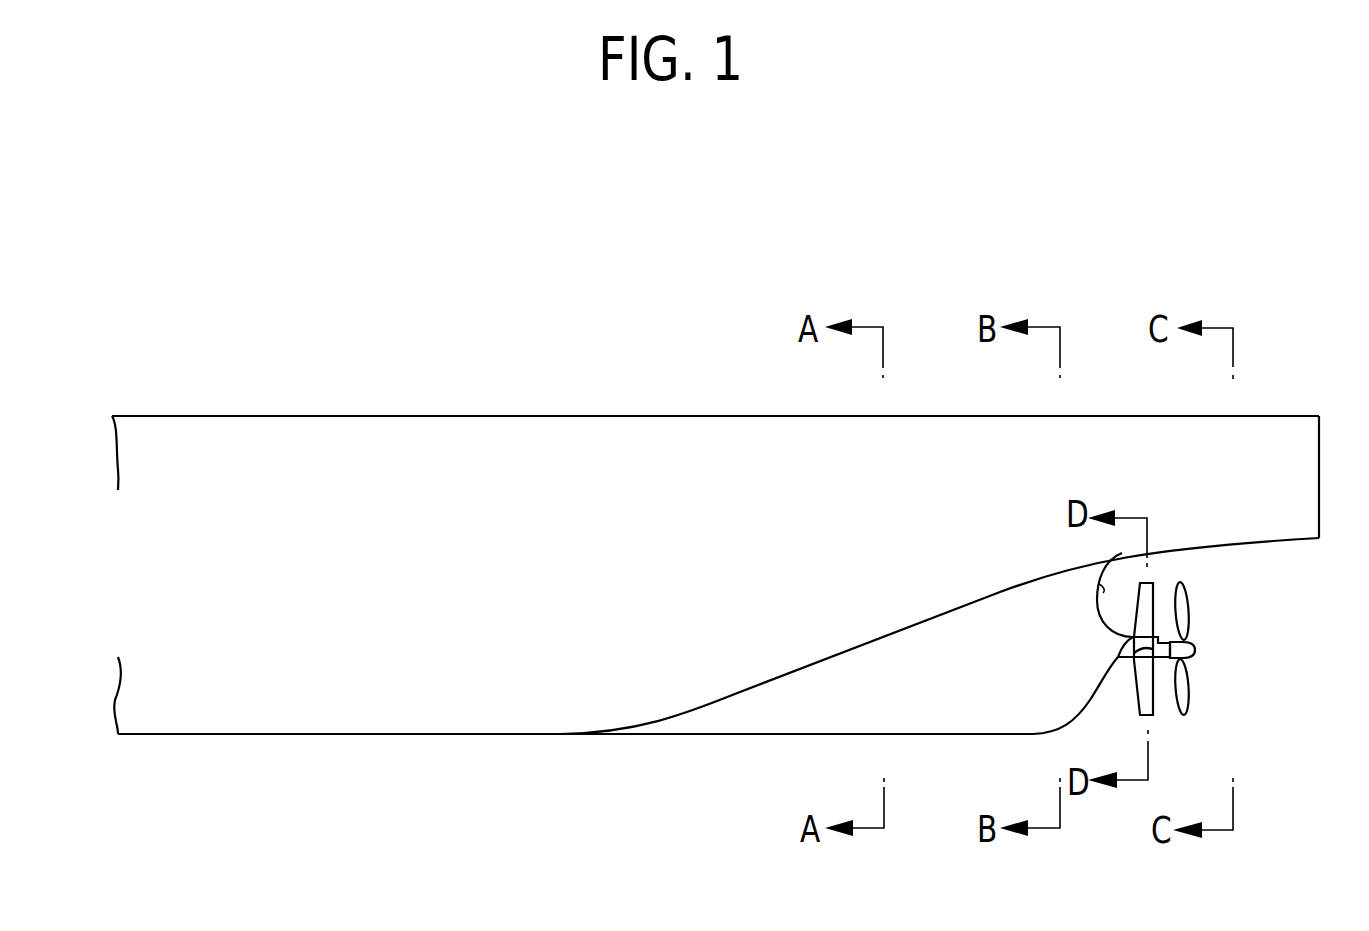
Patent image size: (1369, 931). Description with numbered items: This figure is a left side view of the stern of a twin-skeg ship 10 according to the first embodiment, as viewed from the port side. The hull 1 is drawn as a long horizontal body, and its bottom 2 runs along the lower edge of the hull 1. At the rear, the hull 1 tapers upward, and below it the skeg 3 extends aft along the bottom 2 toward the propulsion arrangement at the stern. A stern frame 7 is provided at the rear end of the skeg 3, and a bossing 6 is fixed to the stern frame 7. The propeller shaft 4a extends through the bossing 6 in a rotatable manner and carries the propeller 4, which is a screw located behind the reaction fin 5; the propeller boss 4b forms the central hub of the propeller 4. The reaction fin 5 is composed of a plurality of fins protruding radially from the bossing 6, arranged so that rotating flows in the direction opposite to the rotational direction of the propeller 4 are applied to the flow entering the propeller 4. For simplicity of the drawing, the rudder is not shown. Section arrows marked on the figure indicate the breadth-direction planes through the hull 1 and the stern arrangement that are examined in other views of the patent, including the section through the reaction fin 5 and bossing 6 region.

The twin-skeg ship 10 is at (572, 260).
The hull 1 is at (507, 433).
The bottom 2 is at (405, 734).
The skeg 3 is at (937, 718).
The propeller 4 is at (1190, 591).
The propeller shaft 4a is at (1168, 660).
The propeller boss 4b is at (1196, 650).
The reaction fin 5 is at (1098, 656).
The bossing 6 is at (1127, 658).
The stern frame 7 is at (1098, 594).